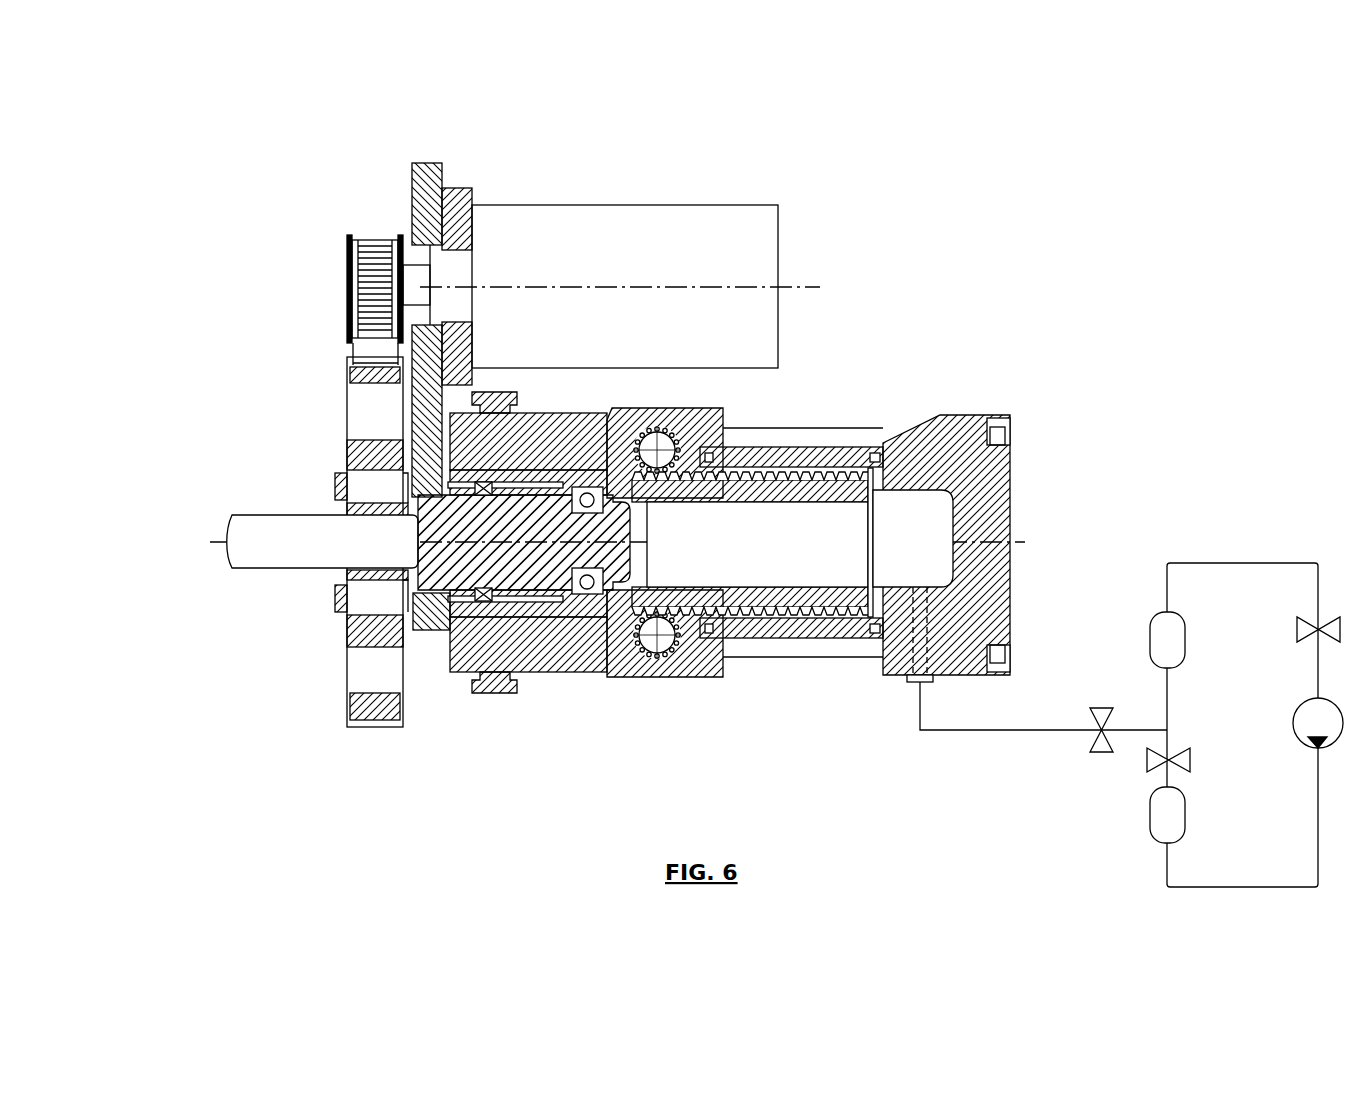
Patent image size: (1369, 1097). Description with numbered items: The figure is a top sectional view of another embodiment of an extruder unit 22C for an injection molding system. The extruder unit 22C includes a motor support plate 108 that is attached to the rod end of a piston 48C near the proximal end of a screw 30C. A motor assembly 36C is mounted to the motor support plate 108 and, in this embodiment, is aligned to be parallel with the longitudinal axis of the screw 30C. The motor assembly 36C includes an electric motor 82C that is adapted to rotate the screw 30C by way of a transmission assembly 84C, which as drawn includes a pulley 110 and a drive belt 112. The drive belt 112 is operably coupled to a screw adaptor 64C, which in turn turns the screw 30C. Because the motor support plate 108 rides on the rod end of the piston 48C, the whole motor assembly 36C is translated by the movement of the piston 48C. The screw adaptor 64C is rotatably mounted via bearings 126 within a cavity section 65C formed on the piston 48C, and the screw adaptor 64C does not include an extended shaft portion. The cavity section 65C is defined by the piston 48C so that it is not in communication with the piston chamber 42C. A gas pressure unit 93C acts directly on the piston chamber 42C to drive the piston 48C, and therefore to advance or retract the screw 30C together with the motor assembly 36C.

The extruder unit 22C is at (582, 474).
The motor assembly 36C is at (480, 398).
The electric motor 82C is at (588, 205).
The motor support plate 108 is at (427, 163).
The transmission assembly 84C is at (274, 481).
The pulley 110 is at (347, 283).
The drive belt 112 is at (314, 542).
The screw 30C is at (267, 570).
The screw adaptor 64C is at (440, 578).
The cavity section 65C is at (613, 580).
The bearings 126 is at (600, 470).
The piston 48C is at (847, 608).
The piston chamber 42C is at (897, 523).
The gas pressure unit 93C is at (1118, 852).